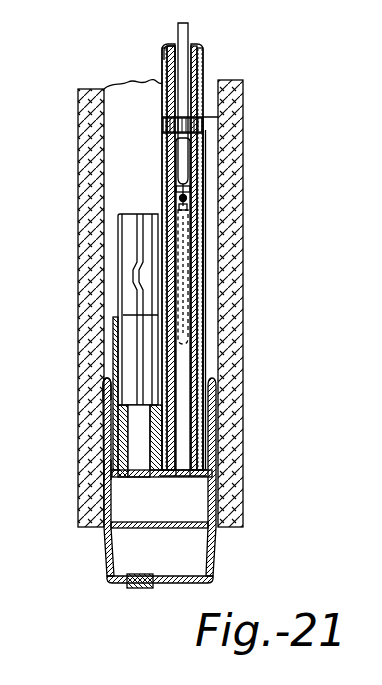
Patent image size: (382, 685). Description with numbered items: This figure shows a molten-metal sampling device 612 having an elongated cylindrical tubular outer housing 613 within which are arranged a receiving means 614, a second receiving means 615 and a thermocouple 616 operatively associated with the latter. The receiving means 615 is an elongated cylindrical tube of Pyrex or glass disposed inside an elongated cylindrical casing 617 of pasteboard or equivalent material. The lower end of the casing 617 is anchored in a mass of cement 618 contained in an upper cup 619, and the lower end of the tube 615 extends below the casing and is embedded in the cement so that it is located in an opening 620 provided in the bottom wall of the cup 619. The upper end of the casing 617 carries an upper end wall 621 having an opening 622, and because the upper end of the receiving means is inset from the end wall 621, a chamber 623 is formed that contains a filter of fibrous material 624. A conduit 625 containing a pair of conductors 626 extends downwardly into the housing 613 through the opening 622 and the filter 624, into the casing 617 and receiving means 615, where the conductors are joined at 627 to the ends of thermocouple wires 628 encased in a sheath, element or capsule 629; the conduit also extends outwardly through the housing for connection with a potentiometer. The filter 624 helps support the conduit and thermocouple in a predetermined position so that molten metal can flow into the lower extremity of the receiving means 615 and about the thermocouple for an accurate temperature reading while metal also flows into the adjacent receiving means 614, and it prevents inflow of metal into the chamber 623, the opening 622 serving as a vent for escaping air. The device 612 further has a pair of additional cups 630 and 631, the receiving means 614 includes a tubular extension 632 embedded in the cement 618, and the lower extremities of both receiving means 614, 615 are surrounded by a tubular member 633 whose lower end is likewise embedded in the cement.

The device 612 is at (84, 90).
The elongated cylindrical tubular outer housing 613 is at (232, 90).
The receiving means 614 is at (118, 209).
The receiving means 615 is at (186, 366).
The thermocouple 616 is at (208, 288).
The casing 617 is at (215, 117).
The cement 618 is at (124, 446).
The upper cup 619 is at (105, 404).
The opening 620 is at (160, 478).
The upper end wall 621 is at (196, 44).
The opening 622 is at (170, 46).
The chamber 623 is at (200, 58).
The filter of fibrous material 624 is at (170, 64).
The conduit 625 is at (178, 30).
The conductors 626 is at (178, 190).
The joint 627 is at (180, 198).
The thermocouple wires 628 is at (180, 207).
The sheath, element or capsule 629 is at (186, 314).
The cup 630 is at (108, 476).
The cup 631 is at (105, 553).
The tubular extension 632 is at (114, 456).
The tubular member 633 is at (116, 338).